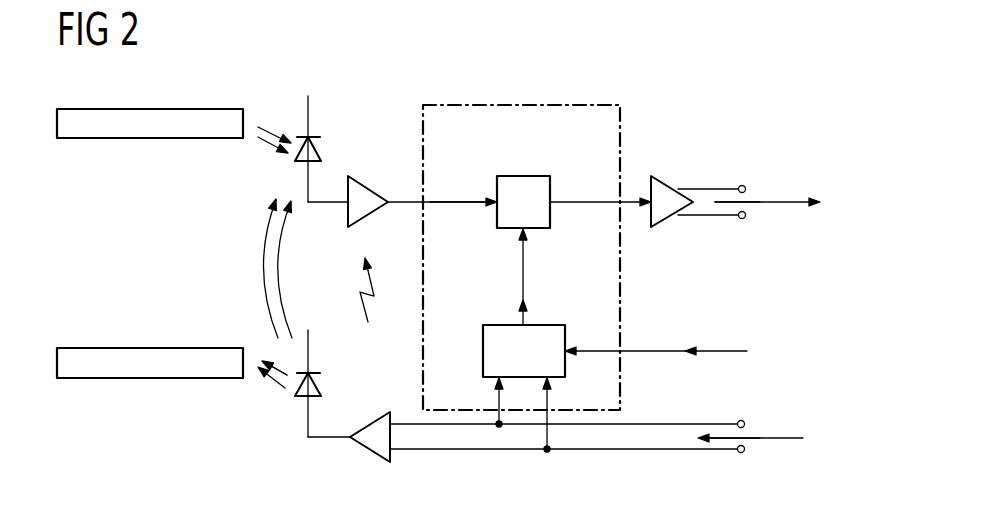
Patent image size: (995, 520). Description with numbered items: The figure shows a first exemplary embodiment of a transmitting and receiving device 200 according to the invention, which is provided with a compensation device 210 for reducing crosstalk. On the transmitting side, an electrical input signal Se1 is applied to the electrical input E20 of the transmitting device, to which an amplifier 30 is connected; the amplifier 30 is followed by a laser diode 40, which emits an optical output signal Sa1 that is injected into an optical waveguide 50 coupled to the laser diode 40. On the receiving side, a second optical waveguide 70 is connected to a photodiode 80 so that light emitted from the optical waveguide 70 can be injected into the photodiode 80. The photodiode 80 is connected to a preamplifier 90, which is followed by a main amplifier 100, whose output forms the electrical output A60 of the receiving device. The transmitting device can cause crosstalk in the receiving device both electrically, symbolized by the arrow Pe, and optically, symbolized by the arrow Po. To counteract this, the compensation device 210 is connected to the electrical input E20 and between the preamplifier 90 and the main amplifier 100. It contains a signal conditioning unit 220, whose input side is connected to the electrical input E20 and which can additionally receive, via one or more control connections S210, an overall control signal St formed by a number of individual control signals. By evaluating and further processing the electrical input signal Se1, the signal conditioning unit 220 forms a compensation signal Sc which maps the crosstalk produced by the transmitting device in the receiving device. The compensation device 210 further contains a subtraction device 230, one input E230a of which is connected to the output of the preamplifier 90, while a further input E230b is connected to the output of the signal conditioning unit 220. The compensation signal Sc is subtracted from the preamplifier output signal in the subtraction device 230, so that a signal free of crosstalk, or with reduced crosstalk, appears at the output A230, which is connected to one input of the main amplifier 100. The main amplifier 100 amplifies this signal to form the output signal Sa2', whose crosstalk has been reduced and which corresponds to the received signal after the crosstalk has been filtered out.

The transmitting and receiving device 200 is at (667, 89).
The optical waveguide 70 is at (150, 138).
The optical waveguide 50 is at (150, 347).
The photodiode 80 is at (322, 143).
The laser diode 40 is at (322, 380).
The preamplifier 90 is at (392, 177).
The amplifier 30 is at (370, 453).
The main amplifier 100 is at (667, 177).
The compensation device 210 is at (493, 105).
The signal conditioning unit 220 is at (543, 325).
The subtraction device 230 is at (520, 176).
The input of the subtraction device E230a is at (497, 190).
The further input of the subtraction device E230b is at (517, 229).
The output of the subtraction device A230 is at (580, 170).
The compensation signal Sc is at (508, 275).
The control connection S210 is at (620, 350).
The control signal St is at (716, 339).
The optical output signal Sa1 is at (285, 388).
The output signal with reduced crosstalk Sa2' is at (767, 174).
The electrical output of the receiving device A60 is at (750, 208).
The electrical input of the transmitting device E20 is at (752, 445).
The electrical input signal Se1 is at (778, 437).
The optical crosstalk Po is at (260, 270).
The electrical crosstalk Pe is at (360, 312).